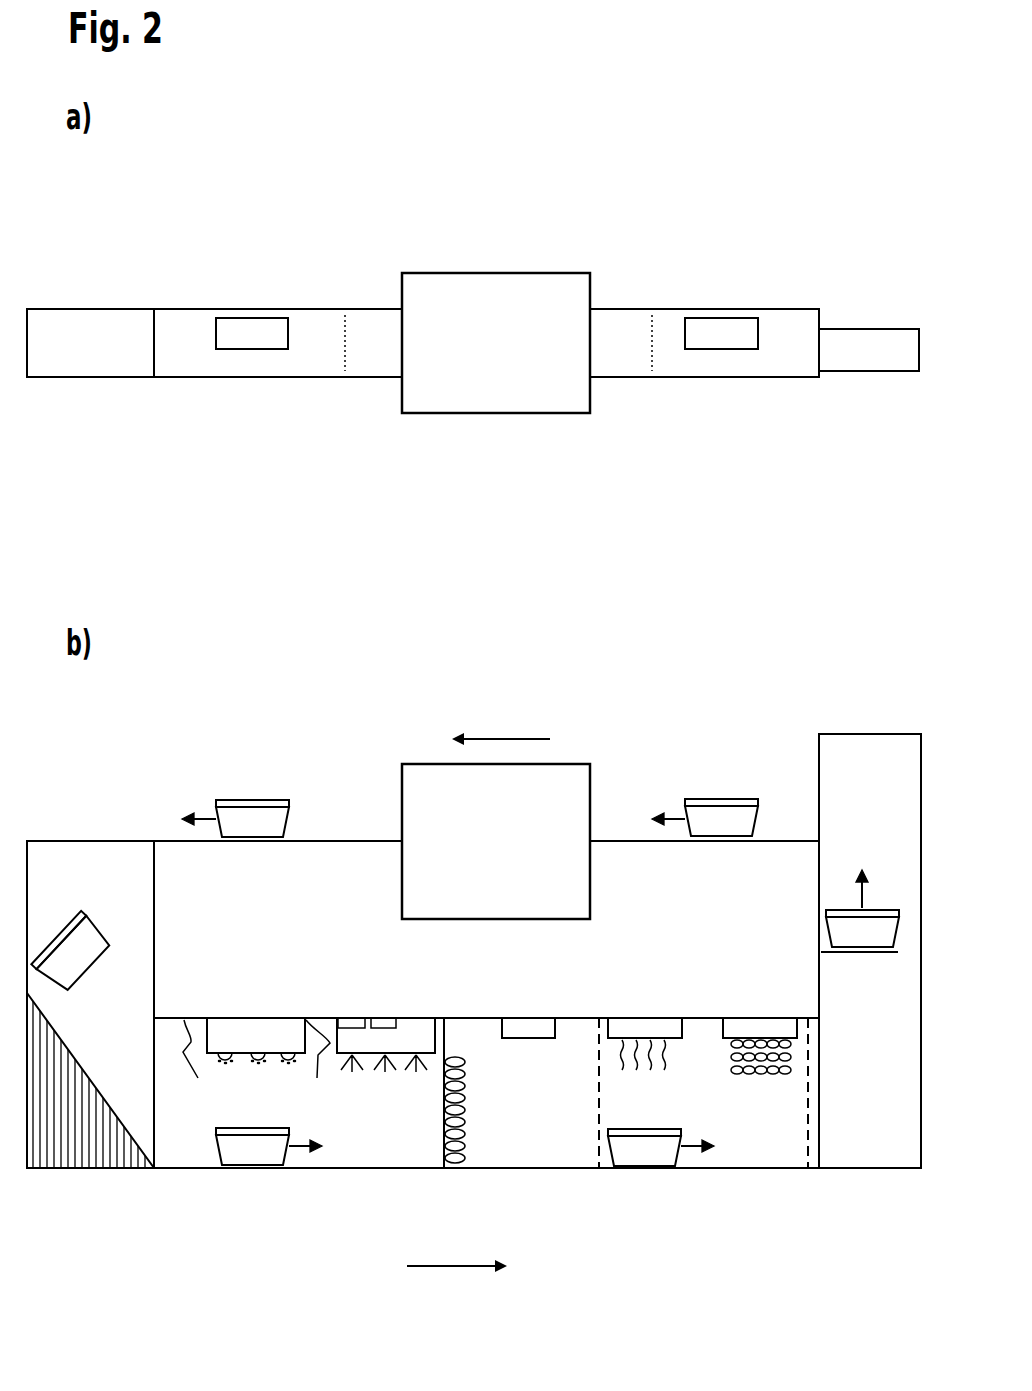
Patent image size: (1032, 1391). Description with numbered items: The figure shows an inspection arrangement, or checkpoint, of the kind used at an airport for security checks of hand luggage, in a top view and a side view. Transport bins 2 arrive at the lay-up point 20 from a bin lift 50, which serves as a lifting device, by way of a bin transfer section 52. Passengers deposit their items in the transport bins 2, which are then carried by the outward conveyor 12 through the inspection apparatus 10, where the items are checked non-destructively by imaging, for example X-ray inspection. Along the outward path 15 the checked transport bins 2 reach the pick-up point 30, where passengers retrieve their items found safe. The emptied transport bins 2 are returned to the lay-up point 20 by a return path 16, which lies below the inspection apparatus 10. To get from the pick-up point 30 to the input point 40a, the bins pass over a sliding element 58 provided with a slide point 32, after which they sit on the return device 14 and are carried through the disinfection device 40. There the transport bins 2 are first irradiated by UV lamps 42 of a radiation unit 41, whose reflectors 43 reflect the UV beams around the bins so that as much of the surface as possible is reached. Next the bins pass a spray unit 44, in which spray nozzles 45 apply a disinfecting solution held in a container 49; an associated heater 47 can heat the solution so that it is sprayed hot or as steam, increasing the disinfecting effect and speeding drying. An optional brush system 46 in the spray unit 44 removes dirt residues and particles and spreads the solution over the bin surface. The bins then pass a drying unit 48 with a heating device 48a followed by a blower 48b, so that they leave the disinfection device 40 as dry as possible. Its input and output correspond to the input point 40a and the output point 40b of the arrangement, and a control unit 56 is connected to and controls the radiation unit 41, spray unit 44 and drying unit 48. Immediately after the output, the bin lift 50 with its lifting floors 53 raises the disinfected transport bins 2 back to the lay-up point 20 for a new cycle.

In FIG. 2a, the transport bin 2 is at (247, 328).
In FIG. 2b, the transport bin 2 is at (252, 812).
In FIG. 2a, the inspection apparatus 10 is at (508, 285).
In FIG. 2b, the inspection apparatus 10 is at (566, 775).
In FIG. 2a, the outward conveyor 12 is at (368, 322).
In FIG. 2b, the return device 14 is at (222, 1155).
In FIG. 2b, the outward path 15 is at (509, 739).
In FIG. 2b, the return path 16 is at (447, 1267).
In FIG. 2a, the lay-up point 20 is at (783, 322).
In FIG. 2b, the lay-up point 20 is at (786, 818).
In FIG. 2a, the pick-up point 30 is at (183, 322).
In FIG. 2b, the pick-up point 30 is at (155, 803).
In FIG. 2a, the slide point 32 is at (67, 322).
In FIG. 2b, the slide point 32 is at (98, 856).
In FIG. 2b, the disinfection device 40 is at (388, 1196).
In FIG. 2b, the input point 40a is at (152, 1128).
In FIG. 2b, the output point 40b is at (810, 1112).
In FIG. 2b, the radiation unit 41 is at (262, 1030).
In FIG. 2b, the UV lamps 42 is at (226, 1052).
In FIG. 2b, the reflectors 43 is at (184, 1020).
In FIG. 2b, the spray unit 44 is at (418, 1030).
In FIG. 2b, the spray nozzles 45 is at (418, 1072).
In FIG. 2b, the brush system 46 is at (462, 1150).
In FIG. 2b, the heater 47 is at (347, 1025).
In FIG. 2b, the drying unit 48 is at (806, 1148).
In FIG. 2b, the heating device 48a is at (646, 1030).
In FIG. 2b, the blower 48b is at (763, 1030).
In FIG. 2b, the container 49 is at (382, 1025).
In FIG. 2a, the bin lift 50 is at (857, 340).
In FIG. 2b, the bin lift 50 is at (867, 745).
In FIG. 2a, the bin transfer section 52 is at (790, 365).
In FIG. 2b, the lifting floors 53 is at (865, 955).
In FIG. 2b, the control unit 56 is at (526, 1028).
In FIG. 2b, the sliding element 58 is at (85, 1168).